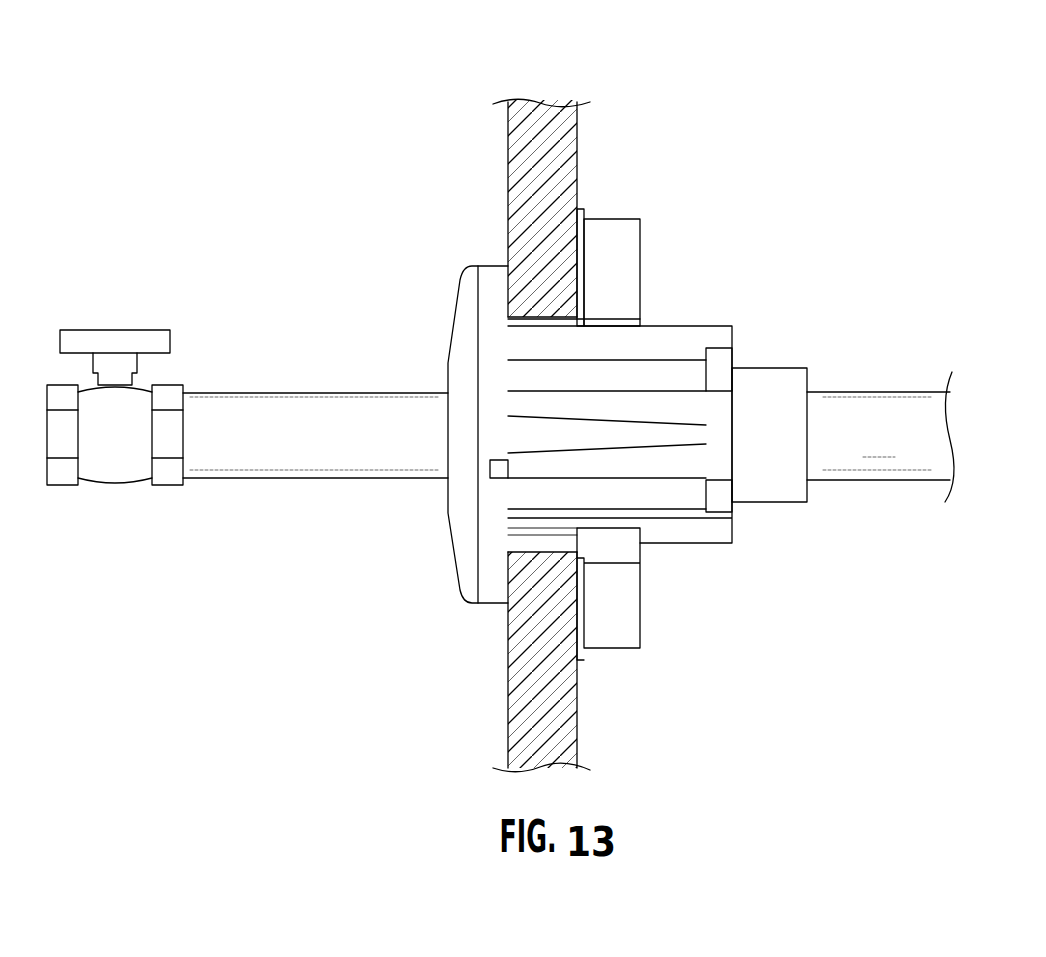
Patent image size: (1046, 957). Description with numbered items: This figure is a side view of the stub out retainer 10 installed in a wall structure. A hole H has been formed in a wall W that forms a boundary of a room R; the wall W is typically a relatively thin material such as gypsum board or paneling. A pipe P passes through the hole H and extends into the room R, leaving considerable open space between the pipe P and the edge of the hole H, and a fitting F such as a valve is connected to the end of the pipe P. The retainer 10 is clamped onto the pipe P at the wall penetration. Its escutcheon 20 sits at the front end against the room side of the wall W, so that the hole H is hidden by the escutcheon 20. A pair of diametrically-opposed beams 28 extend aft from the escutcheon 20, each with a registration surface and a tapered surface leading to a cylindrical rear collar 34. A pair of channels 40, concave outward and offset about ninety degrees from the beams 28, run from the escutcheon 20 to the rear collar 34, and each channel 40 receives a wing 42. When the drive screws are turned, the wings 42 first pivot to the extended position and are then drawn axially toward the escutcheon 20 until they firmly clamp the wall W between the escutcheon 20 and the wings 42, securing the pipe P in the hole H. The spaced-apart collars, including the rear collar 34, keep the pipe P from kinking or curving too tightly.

The stub out retainer 10 is at (818, 238).
The escutcheon 20 is at (460, 363).
The beams 28 is at (645, 435).
The rear collar 34 is at (783, 482).
The channels 40 is at (678, 340).
The wings 42 is at (605, 240).
The wall W is at (540, 118).
The hole H is at (541, 550).
The pipe P is at (885, 425).
The fitting F is at (115, 345).
The room R is at (192, 603).